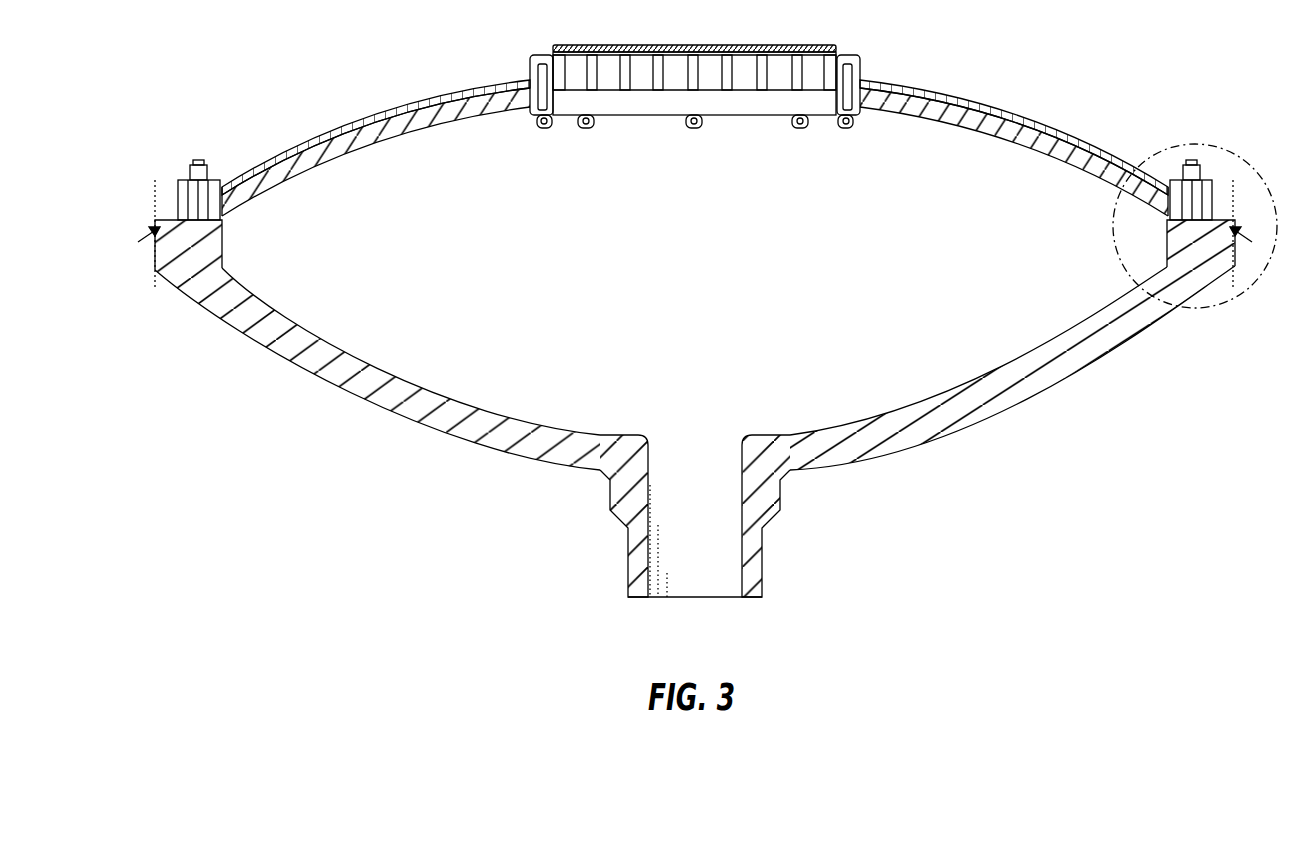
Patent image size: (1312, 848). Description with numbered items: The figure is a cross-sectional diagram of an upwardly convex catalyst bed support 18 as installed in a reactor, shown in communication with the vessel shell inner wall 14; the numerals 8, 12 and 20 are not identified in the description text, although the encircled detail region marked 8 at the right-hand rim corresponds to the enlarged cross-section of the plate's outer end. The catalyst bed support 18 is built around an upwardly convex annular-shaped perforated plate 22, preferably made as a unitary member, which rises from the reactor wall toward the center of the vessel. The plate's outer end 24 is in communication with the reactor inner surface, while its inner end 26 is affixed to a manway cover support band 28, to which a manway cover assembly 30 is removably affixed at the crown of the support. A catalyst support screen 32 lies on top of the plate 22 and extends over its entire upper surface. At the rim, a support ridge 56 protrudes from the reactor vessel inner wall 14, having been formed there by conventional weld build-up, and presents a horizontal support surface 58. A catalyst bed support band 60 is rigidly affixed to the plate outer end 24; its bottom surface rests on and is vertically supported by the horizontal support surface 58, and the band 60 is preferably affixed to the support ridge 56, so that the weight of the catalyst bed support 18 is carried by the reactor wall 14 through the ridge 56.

The detail circle 8 is at (1108, 240).
The shell wall 12 is at (277, 363).
The vessel shell inner wall 14 is at (443, 397).
The catalyst bed support 18 is at (695, 122).
The neck 20 is at (623, 532).
The annular-shaped perforated plate 22 is at (370, 130).
The outer end 24 is at (247, 190).
The inner end 26 is at (497, 106).
The manway cover support band 28 is at (552, 118).
The manway cover assembly 30 is at (666, 42).
The catalyst support screen 32 is at (450, 90).
The support ridge 56 is at (1207, 282).
The horizontal support surface 58 is at (1223, 208).
The catalyst bed support band 60 is at (1203, 178).